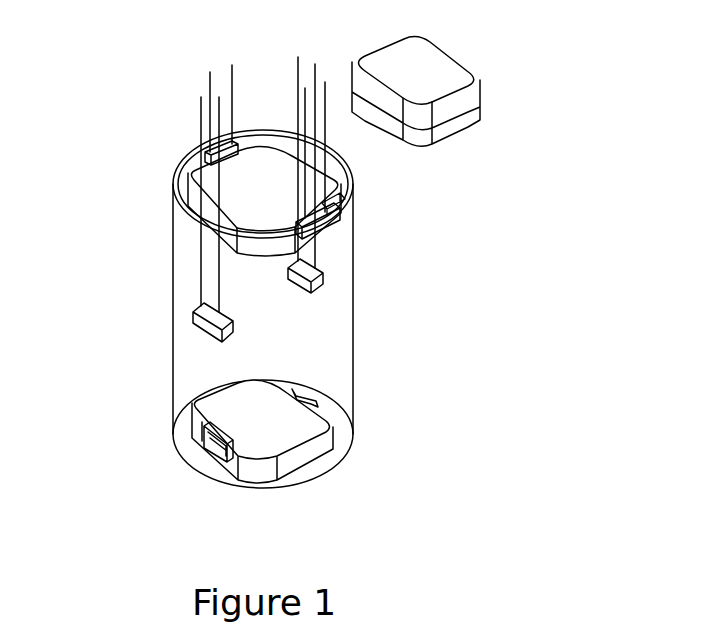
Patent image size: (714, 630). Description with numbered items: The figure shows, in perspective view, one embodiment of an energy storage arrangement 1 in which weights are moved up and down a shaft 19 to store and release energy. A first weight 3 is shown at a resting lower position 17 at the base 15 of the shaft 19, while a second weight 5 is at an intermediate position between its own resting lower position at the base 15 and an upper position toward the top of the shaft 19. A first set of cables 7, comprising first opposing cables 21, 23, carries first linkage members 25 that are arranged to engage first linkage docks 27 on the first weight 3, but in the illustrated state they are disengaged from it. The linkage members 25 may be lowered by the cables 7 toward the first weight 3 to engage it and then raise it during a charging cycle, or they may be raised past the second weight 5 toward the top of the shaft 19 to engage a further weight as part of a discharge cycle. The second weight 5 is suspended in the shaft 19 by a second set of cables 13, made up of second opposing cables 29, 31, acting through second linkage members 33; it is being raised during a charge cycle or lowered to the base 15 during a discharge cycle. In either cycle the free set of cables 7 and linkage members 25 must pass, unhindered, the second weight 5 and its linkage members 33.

The energy storage arrangement 1 is at (133, 243).
The first weight 3 is at (160, 437).
The second weight 5 is at (345, 186).
The first set of cables 7 is at (184, 245).
The second set of cables 13 is at (200, 89).
The base 15 is at (322, 464).
The resting lower position 17 is at (393, 415).
The shaft 19 is at (352, 307).
The first opposing cable 21 is at (220, 292).
The first opposing cable 23 is at (328, 77).
The first linkage members 25 is at (303, 283).
The first linkage docks 27 is at (207, 442).
The second opposing cable 29 is at (209, 76).
The second opposing cable 31 is at (340, 220).
The second linkage members 33 is at (226, 127).